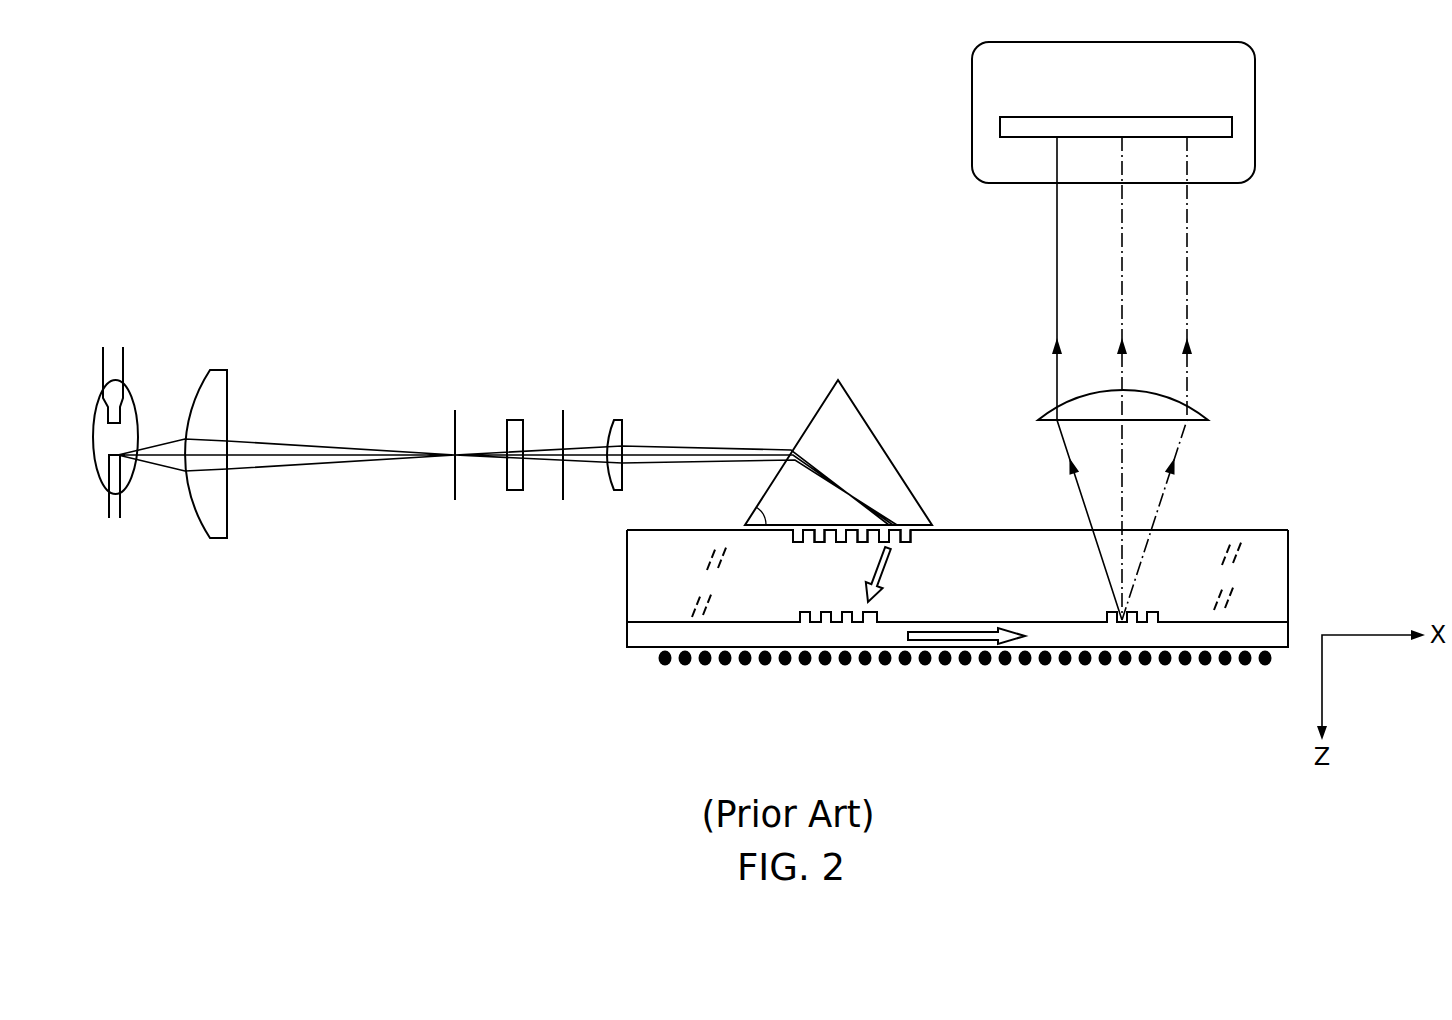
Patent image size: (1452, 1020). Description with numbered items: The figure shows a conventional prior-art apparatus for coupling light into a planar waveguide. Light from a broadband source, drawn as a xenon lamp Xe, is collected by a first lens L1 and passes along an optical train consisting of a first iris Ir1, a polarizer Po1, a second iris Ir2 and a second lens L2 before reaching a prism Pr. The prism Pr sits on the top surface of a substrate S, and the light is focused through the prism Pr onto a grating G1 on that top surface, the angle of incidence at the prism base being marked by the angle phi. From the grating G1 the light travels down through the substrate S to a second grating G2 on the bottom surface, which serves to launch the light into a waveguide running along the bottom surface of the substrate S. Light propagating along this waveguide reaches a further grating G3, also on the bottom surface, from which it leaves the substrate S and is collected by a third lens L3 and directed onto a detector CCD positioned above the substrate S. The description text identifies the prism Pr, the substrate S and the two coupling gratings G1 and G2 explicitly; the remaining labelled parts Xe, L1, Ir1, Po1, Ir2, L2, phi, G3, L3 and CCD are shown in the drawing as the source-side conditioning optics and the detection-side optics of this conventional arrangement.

The Xe lamp (xenon light source) Xe is at (116, 397).
The collimating lens L1 is at (206, 480).
The iris diaphragm Ir1 is at (447, 435).
The polarizer Po1 is at (516, 482).
The iris diaphragm Ir2 is at (555, 435).
The lens L2 is at (620, 432).
The prism Pr is at (838, 452).
The incidence angle φ phi is at (767, 514).
The substrate S is at (957, 598).
The grating G1 is at (868, 551).
The second grating G2 is at (815, 606).
The output grating G3 is at (1113, 606).
The collecting lens L3 is at (1140, 411).
The CCD detector CCD is at (1113, 112).